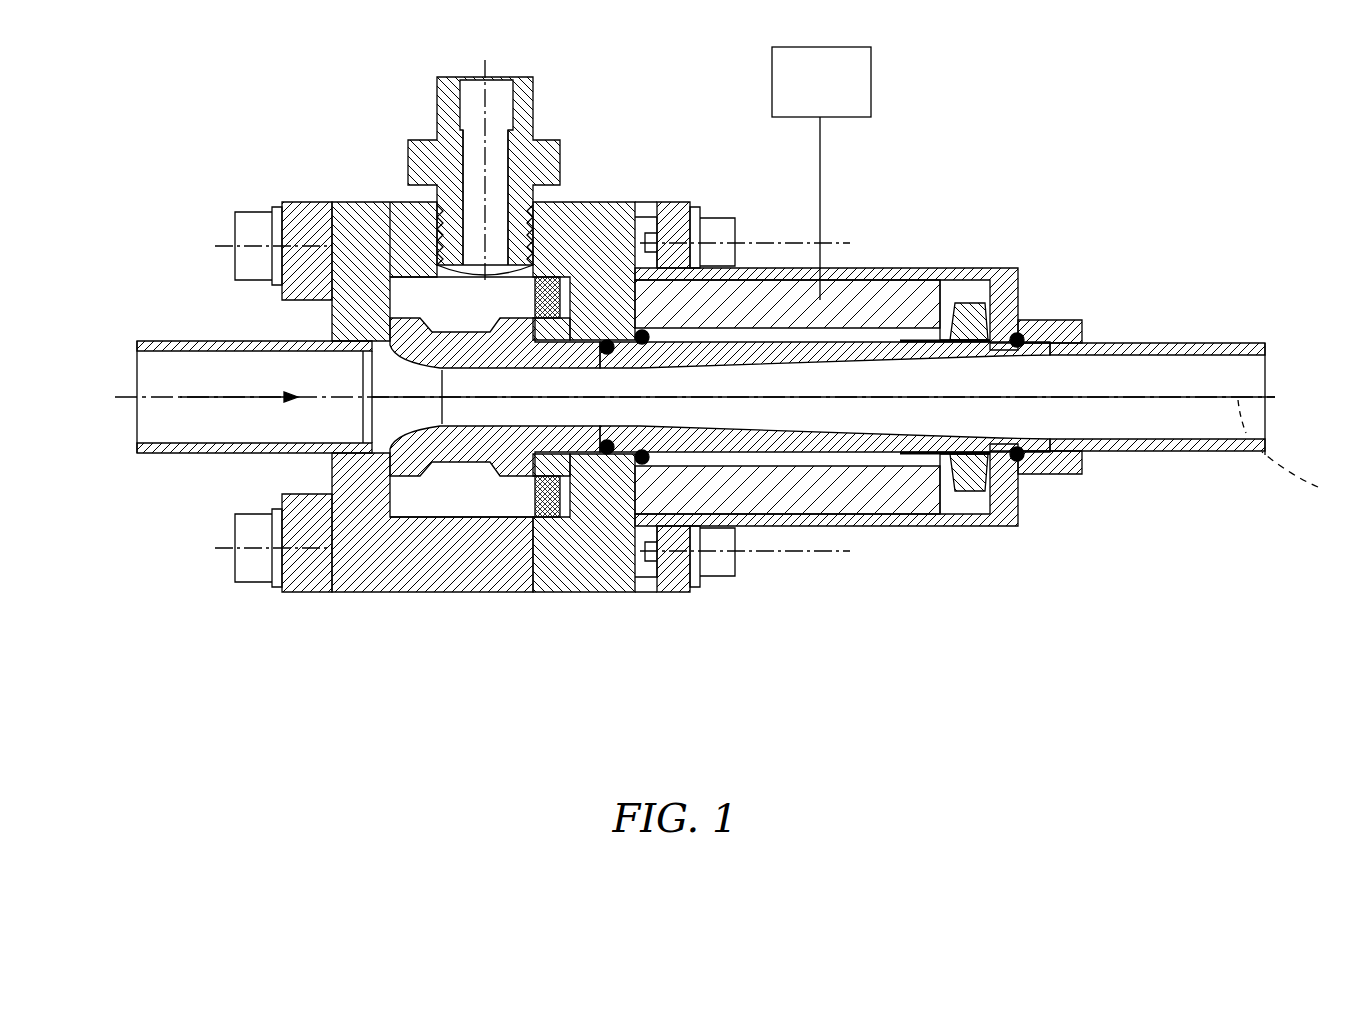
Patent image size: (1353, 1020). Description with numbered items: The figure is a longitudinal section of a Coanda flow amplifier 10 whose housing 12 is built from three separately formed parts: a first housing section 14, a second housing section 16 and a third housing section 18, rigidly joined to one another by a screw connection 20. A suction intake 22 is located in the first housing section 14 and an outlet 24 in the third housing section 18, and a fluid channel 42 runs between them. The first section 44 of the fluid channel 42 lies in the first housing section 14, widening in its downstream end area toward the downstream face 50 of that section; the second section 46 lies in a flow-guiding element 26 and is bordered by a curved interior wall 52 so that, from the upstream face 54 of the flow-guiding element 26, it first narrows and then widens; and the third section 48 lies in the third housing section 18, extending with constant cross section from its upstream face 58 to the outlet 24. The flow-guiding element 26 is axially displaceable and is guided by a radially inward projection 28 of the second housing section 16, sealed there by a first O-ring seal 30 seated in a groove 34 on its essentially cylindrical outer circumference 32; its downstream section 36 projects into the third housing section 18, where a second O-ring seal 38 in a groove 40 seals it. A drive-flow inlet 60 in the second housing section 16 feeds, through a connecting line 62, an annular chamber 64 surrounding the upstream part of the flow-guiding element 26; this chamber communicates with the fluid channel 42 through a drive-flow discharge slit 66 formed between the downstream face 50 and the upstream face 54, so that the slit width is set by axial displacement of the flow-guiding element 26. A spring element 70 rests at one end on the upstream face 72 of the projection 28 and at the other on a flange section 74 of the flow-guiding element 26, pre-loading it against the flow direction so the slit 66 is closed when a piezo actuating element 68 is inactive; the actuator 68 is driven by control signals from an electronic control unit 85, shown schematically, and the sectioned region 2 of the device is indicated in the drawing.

The fluid flow region 2 is at (325, 432).
The Coanda flow amplifier 10 is at (845, 160).
The housing 12 is at (322, 199).
The first housing section 14 is at (372, 202).
The second housing section 16 is at (613, 217).
The third housing section 18 is at (955, 270).
The screw connection 20 is at (718, 230).
The suction intake 22 is at (137, 428).
The outlet 24 is at (1267, 378).
The flow-guiding element 26 is at (712, 590).
The projection 28 is at (596, 570).
The first O-ring seal 30 is at (600, 560).
The outer circumference 32 is at (735, 330).
The groove 34 is at (640, 265).
The downstream section 36 is at (877, 455).
The second O-ring seal 38 is at (1020, 320).
The groove 40 is at (1040, 325).
The fluid channel 42 is at (890, 300).
The first section of the fluid channel 44 is at (232, 418).
The second section of the fluid channel 46 is at (790, 432).
The third section of the fluid channel 48 is at (1142, 425).
The downstream face 50 is at (407, 588).
The curved interior wall 52 is at (462, 590).
The upstream face 54 is at (388, 204).
The upstream face 58 is at (1038, 475).
The drive-flow inlet 60 is at (503, 75).
The connecting line 62 is at (497, 168).
The annular chamber 64 is at (436, 497).
The drive-flow discharge slit 66 is at (392, 320).
The actuating element 68 is at (950, 318).
The spring element 70 is at (550, 560).
The upstream face 72 is at (545, 277).
The flange section 74 is at (513, 330).
The electronic control unit 85 is at (872, 80).